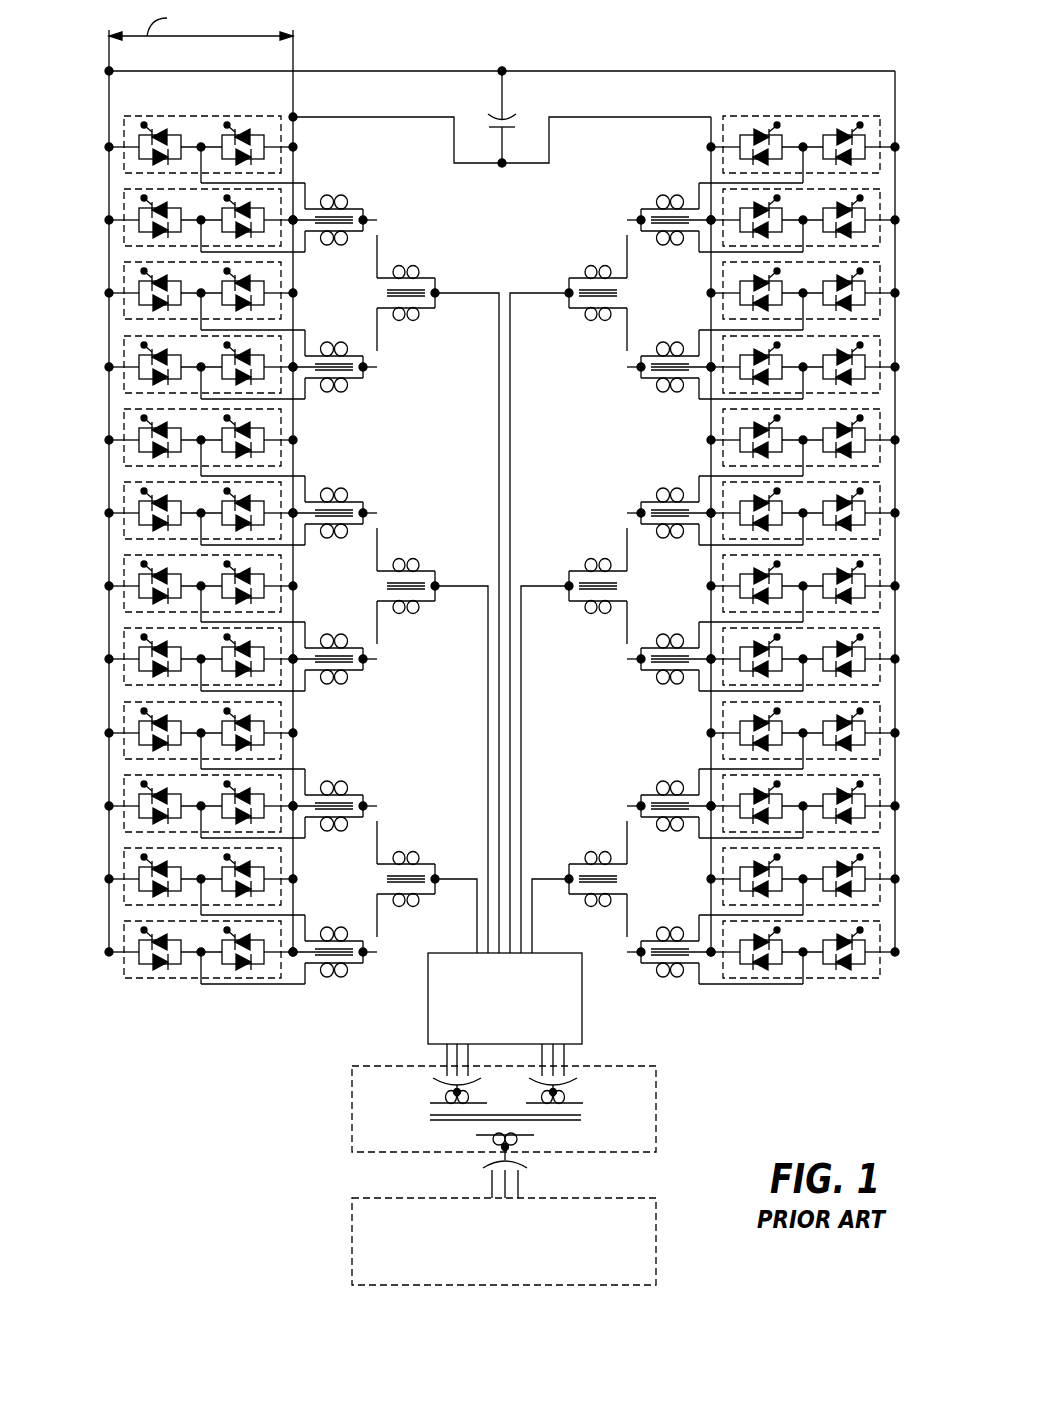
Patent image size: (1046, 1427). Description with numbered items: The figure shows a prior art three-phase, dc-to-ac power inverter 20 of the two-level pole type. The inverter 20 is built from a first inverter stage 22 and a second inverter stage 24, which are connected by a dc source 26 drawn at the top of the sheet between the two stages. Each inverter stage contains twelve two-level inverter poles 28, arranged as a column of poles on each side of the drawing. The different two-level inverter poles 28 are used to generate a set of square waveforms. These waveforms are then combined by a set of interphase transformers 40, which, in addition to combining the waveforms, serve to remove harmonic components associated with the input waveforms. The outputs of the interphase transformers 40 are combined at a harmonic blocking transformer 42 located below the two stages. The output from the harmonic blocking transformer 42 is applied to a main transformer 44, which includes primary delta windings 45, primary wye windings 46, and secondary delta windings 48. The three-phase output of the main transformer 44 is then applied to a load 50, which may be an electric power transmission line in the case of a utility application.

The dc-to-ac power inverter 20 is at (722, 48).
The first inverter stage 22 is at (182, 491).
The second inverter stage 24 is at (906, 384).
The dc source 26 is at (517, 120).
The two-level inverter pole 28 is at (147, 115).
The interphase transformer 40 is at (405, 269).
The harmonic blocking transformer 42 is at (583, 994).
The main transformer 44 is at (532, 1104).
The primary delta windings 45 is at (432, 1086).
The primary wye windings 46 is at (608, 1083).
The secondary delta windings 48 is at (573, 1137).
The load 50 is at (657, 1236).